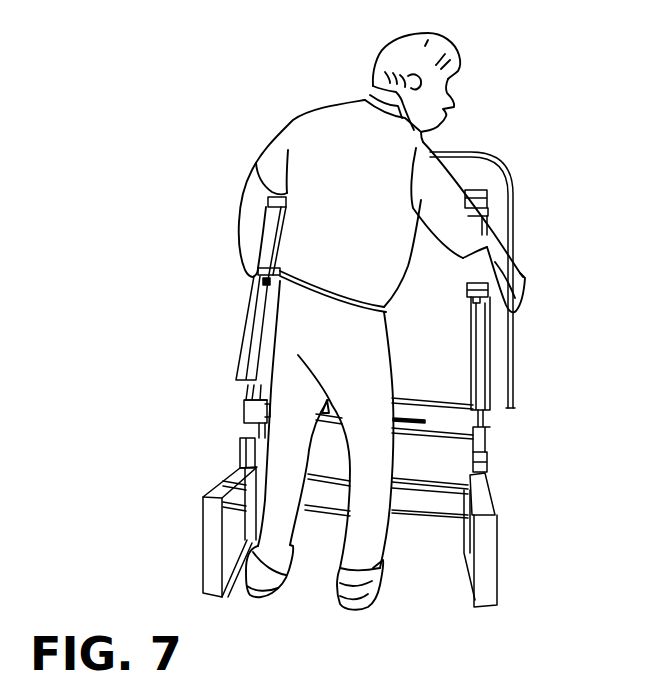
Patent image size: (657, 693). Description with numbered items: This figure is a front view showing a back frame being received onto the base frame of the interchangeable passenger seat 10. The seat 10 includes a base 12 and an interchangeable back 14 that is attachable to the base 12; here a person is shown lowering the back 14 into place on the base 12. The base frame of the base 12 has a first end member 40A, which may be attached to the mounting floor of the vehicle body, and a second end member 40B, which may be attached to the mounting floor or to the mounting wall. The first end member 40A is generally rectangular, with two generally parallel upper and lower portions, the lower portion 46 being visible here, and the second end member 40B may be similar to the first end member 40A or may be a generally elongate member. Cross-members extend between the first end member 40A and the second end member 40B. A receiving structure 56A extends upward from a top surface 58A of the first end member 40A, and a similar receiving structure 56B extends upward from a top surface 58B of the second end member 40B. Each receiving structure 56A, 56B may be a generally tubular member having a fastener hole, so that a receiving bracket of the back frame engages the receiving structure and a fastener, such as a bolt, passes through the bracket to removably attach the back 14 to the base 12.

The interchangeable passenger seat 10 is at (557, 186).
The base 12 is at (438, 488).
The interchangeable back 14 is at (495, 360).
The first end member 40A is at (206, 497).
The second end member 40B is at (487, 593).
The lower portion 46 is at (238, 558).
The receiving structure 56A is at (245, 448).
The receiving structure 56B is at (485, 467).
The top surface 58A is at (227, 485).
The top surface 58B is at (487, 506).